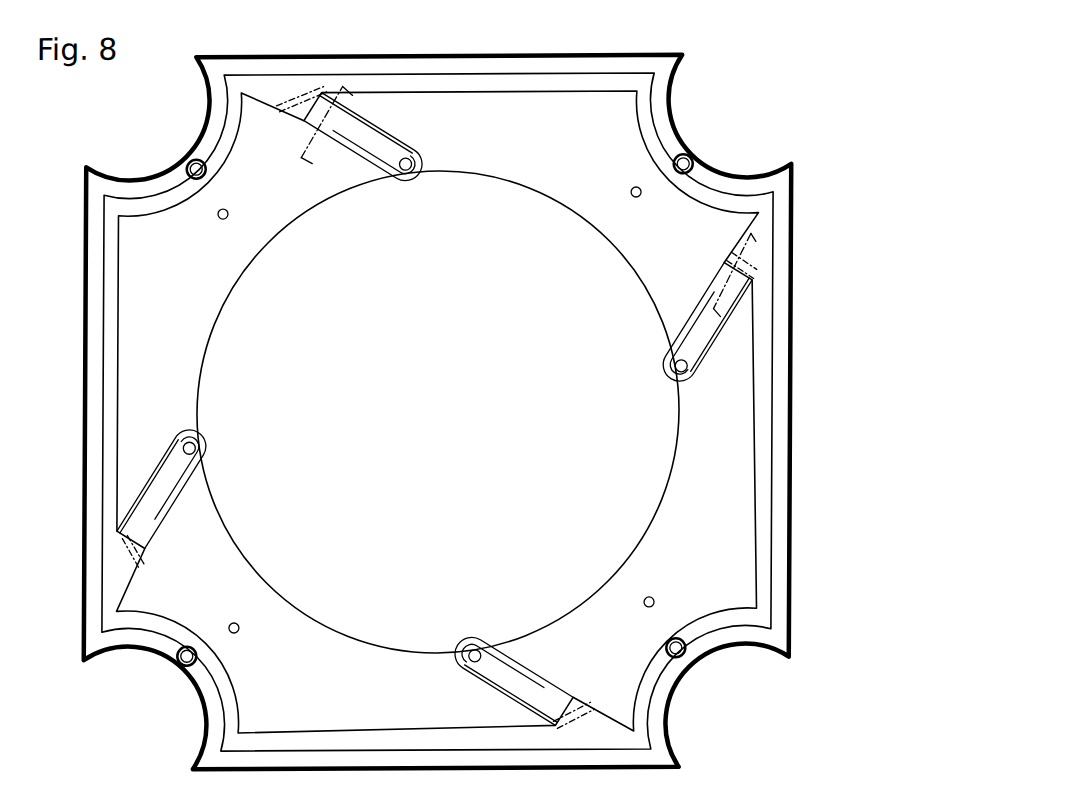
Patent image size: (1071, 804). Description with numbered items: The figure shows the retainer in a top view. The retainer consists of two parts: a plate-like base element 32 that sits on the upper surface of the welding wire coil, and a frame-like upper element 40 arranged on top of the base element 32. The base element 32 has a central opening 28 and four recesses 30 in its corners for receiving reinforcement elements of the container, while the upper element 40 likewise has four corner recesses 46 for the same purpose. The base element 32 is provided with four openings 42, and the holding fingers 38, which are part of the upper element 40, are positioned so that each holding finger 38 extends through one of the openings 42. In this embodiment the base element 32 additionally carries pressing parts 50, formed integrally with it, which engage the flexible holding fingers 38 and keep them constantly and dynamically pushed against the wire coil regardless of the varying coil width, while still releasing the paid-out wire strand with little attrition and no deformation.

The central opening 28 is at (480, 358).
The recess 30 is at (675, 118).
The base element 32 is at (781, 278).
The holding finger 38 is at (375, 150).
The upper element 40 is at (740, 504).
The opening 42 is at (398, 165).
The recess 46 is at (655, 100).
The pressing part 50 is at (308, 118).